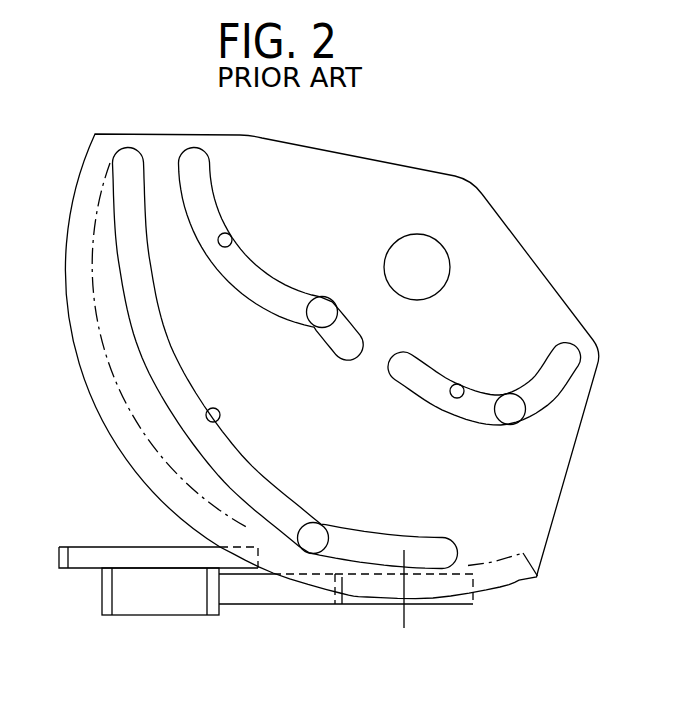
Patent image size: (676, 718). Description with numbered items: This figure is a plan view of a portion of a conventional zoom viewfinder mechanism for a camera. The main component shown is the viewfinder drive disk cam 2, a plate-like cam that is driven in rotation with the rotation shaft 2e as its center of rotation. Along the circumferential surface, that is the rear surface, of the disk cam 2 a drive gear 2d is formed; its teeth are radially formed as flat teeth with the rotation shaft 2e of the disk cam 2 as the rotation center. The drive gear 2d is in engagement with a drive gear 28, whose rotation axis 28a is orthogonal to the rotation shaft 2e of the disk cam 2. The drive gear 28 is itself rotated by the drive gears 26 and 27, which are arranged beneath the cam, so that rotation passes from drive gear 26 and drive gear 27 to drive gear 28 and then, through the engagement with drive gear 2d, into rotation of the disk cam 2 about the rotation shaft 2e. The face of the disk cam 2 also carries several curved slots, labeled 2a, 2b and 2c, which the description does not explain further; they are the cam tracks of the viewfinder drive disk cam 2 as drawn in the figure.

The viewfinder drive disk cam 2 is at (543, 508).
The arcuate guide slot 2a is at (220, 423).
The arcuate guide slot 2b is at (232, 248).
The curved guide slot 2c is at (457, 385).
The drive gear 2d is at (108, 407).
The rotation shaft 2e is at (435, 255).
The drive gear 26 is at (138, 597).
The drive gear 27 is at (258, 590).
The drive gear 28 is at (382, 586).
The rotation axis 28a is at (412, 623).